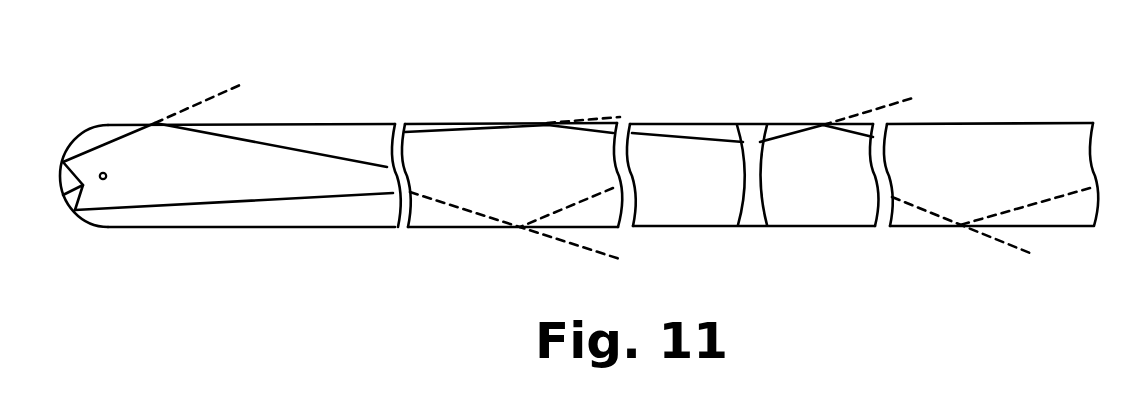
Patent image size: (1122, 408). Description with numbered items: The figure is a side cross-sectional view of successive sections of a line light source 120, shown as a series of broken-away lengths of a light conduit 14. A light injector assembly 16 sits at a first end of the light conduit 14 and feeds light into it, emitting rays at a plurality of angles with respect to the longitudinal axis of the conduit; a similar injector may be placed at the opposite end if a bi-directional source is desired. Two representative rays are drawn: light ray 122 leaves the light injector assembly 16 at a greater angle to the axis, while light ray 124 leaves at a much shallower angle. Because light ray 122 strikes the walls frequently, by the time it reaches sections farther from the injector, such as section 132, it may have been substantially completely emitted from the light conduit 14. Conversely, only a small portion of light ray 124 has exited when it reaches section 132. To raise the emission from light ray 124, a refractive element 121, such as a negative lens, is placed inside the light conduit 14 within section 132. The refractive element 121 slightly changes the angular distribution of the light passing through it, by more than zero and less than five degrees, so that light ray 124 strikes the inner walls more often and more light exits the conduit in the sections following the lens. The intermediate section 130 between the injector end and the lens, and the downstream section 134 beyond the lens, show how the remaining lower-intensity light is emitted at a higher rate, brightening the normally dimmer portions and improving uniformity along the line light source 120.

The light conduit 14 is at (343, 123).
The light injector assembly 16 is at (78, 217).
The line light source 120 is at (656, 112).
The refractive element 121 is at (753, 130).
The light ray 122 is at (117, 130).
The light ray 124 is at (192, 203).
The first intermediate section 130 is at (332, 227).
The section 132 is at (797, 226).
The proximal section 134 is at (923, 227).